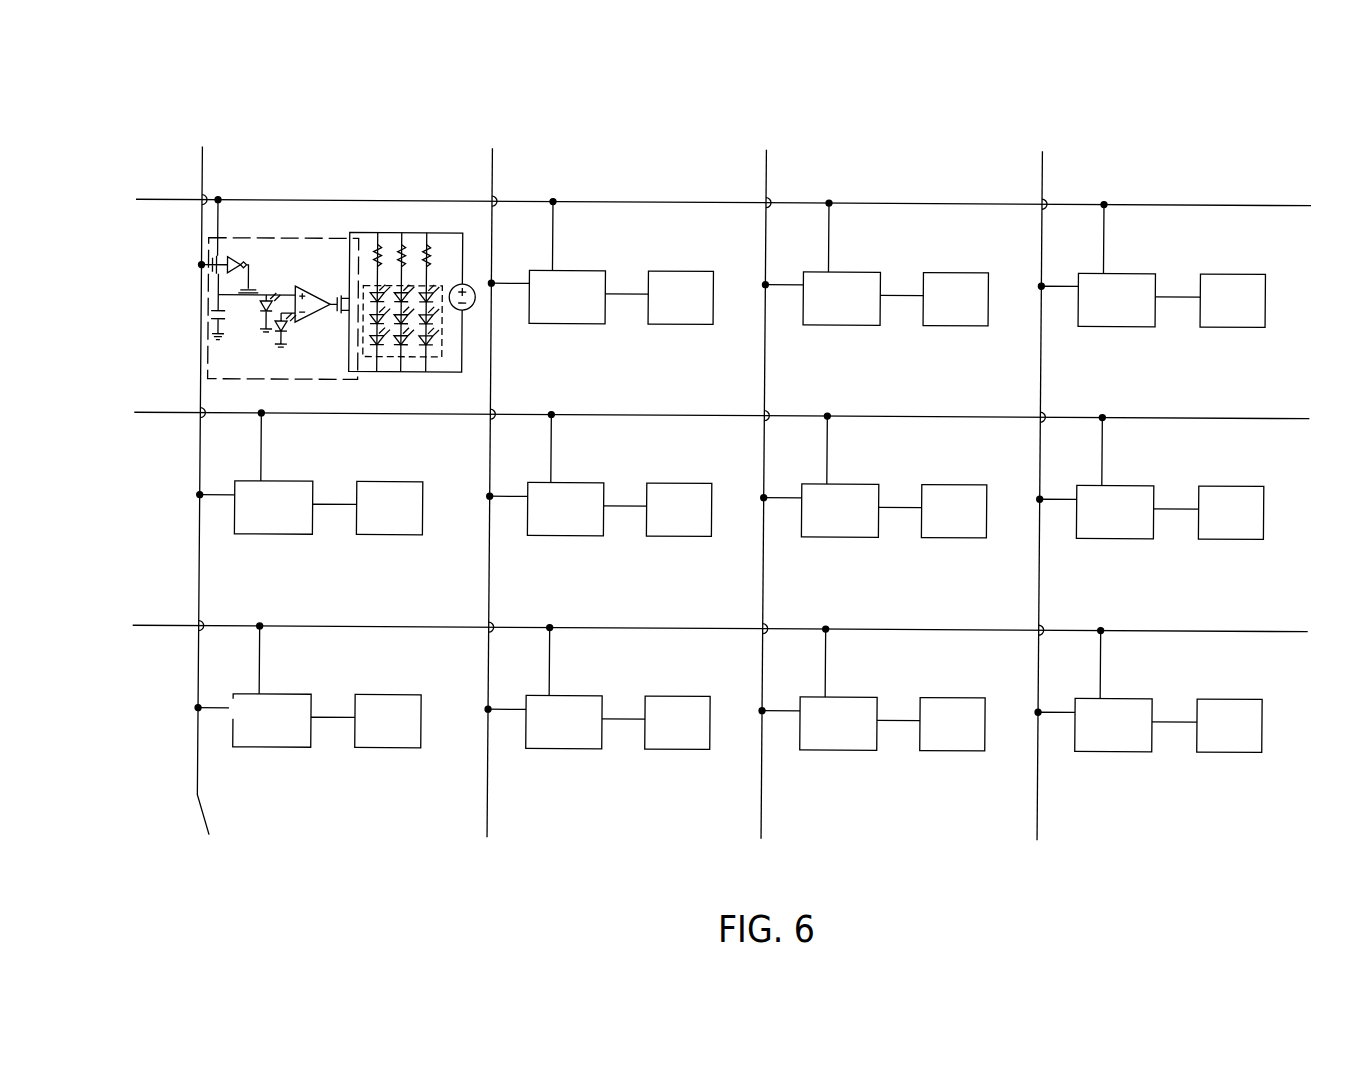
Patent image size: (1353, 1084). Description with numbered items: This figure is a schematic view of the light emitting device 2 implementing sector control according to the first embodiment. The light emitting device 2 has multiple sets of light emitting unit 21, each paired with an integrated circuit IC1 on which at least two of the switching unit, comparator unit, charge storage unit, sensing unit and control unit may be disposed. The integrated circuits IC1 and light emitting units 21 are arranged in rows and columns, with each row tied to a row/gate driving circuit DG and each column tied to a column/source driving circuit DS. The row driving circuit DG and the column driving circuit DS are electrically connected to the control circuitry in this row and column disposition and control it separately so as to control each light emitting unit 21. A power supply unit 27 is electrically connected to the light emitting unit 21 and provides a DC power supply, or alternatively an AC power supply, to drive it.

The light emitting device 2 is at (124, 77).
The light emitting unit 21 is at (437, 357).
The power supply unit 27 is at (464, 283).
The integrated circuit IC1 is at (311, 239).
The column/source driving circuit DS is at (150, 198).
The row/gate driving circuit DG is at (201, 166).